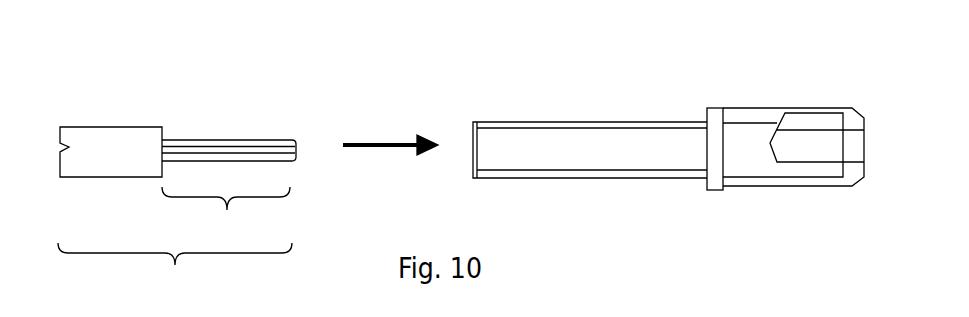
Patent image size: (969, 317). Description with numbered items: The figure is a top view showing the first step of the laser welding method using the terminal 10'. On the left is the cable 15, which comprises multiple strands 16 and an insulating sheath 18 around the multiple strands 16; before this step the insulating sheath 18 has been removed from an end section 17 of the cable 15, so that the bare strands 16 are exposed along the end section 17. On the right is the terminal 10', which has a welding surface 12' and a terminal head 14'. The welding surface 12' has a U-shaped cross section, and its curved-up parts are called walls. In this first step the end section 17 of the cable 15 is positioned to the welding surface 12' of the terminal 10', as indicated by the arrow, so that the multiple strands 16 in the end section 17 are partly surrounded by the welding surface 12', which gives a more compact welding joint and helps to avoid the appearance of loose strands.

The terminal 10' is at (648, 97).
The welding surface 12' is at (569, 110).
The terminal head 14' is at (785, 114).
The cable 15 is at (175, 275).
The multiple strands 16 is at (229, 140).
The end section 17 is at (226, 219).
The insulating sheath 18 is at (93, 127).